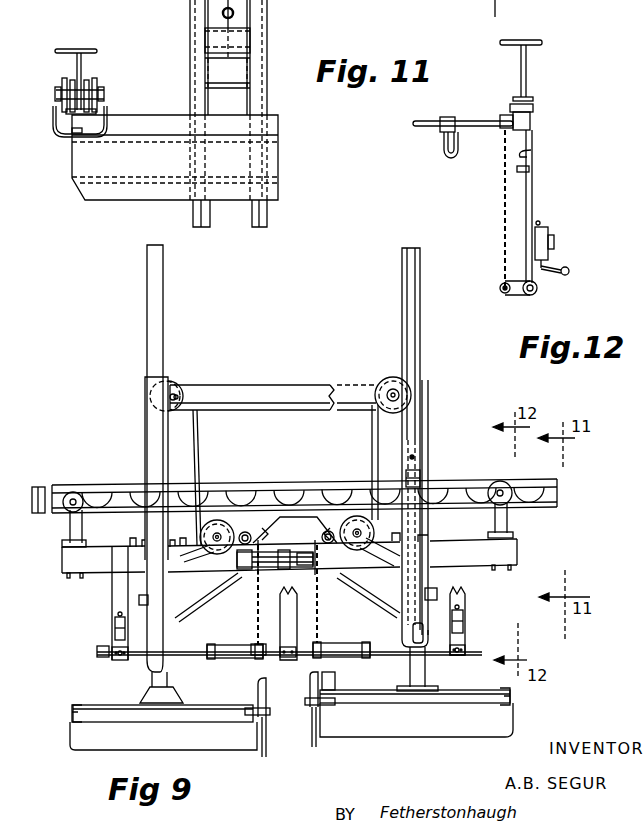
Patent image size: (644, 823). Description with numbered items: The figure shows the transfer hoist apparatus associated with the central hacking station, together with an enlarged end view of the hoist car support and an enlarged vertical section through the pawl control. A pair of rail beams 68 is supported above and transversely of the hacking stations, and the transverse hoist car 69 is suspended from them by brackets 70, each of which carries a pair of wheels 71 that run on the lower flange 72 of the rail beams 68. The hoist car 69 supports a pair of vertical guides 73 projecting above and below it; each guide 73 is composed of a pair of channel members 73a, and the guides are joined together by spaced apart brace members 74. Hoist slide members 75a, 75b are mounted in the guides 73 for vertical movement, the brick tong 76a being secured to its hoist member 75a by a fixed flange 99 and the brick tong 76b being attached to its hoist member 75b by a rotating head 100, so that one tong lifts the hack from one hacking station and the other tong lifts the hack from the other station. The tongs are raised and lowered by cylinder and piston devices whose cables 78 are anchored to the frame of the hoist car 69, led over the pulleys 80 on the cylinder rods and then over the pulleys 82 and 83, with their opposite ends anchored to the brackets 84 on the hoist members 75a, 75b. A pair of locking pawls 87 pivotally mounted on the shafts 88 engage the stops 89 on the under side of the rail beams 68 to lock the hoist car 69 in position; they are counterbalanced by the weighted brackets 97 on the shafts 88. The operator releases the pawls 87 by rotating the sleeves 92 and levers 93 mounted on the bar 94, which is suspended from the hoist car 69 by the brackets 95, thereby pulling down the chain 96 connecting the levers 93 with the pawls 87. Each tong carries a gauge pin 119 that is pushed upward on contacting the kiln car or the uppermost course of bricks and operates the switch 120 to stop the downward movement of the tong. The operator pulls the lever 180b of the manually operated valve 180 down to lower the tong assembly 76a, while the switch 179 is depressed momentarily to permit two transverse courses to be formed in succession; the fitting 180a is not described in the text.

In FIG. 11, the rail beams 68 is at (70, 63).
In FIG. 12, the rail beams 68 is at (527, 67).
In FIG. 9, the rail beams 68 is at (114, 484).
In FIG. 11, the transverse hoist car 69 is at (96, 192).
In FIG. 12, the transverse hoist car 69 is at (533, 155).
In FIG. 9, the transverse hoist car 69 is at (68, 563).
In FIG. 11, the brackets 70 is at (56, 116).
In FIG. 9, the brackets 70 is at (69, 527).
In FIG. 11, the wheels 71 is at (88, 85).
In FIG. 9, the wheels 71 is at (72, 490).
In FIG. 11, the lower flange 72 is at (98, 108).
In FIG. 12, the lower flange 72 is at (527, 101).
In FIG. 11, the vertical guides 73 is at (270, 93).
In FIG. 9, the vertical guides 73 is at (141, 393).
In FIG. 11, the channel members 73a is at (197, 48).
In FIG. 9, the brace members 74 is at (275, 387).
In FIG. 9, the hoist slide member 75a is at (401, 300).
In FIG. 9, the hoist slide member 75b is at (164, 312).
In FIG. 9, the brick tong 76a is at (408, 718).
In FIG. 9, the brick tong 76b is at (86, 737).
In FIG. 9, the cables 78 is at (199, 418).
In FIG. 9, the pulleys 80 is at (287, 616).
In FIG. 9, the pulleys 82 is at (210, 522).
In FIG. 9, the pulleys 83 is at (388, 380).
In FIG. 11, the brackets 84 is at (242, 37).
In FIG. 9, the brackets 84 is at (417, 473).
In FIG. 9, the locking pawls 87 is at (295, 546).
In FIG. 12, the shafts 88 is at (475, 121).
In FIG. 9, the shafts 88 is at (244, 530).
In FIG. 9, the stops 89 is at (284, 508).
In FIG. 12, the sleeves 92 is at (534, 296).
In FIG. 9, the sleeves 92 is at (228, 647).
In FIG. 12, the levers 93 is at (503, 294).
In FIG. 12, the bar 94 is at (538, 288).
In FIG. 9, the bar 94 is at (132, 660).
In FIG. 12, the brackets 95 is at (534, 205).
In FIG. 9, the brackets 95 is at (111, 585).
In FIG. 12, the chain 96 is at (503, 200).
In FIG. 9, the chain 96 is at (256, 603).
In FIG. 12, the weighted brackets 97 is at (443, 153).
In FIG. 9, the fixed flange 99 is at (404, 685).
In FIG. 9, the rotating head 100 is at (170, 700).
In FIG. 9, the pin 119 is at (266, 757).
In FIG. 9, the switch 120 is at (248, 688).
In FIG. 9, the switch 179 is at (143, 595).
In FIG. 12, the manually operated valve 180 is at (549, 236).
In FIG. 9, the manually operated valve 180 is at (465, 625).
In FIG. 9, the switch 180a is at (114, 629).
In FIG. 12, the lever 180b is at (563, 268).